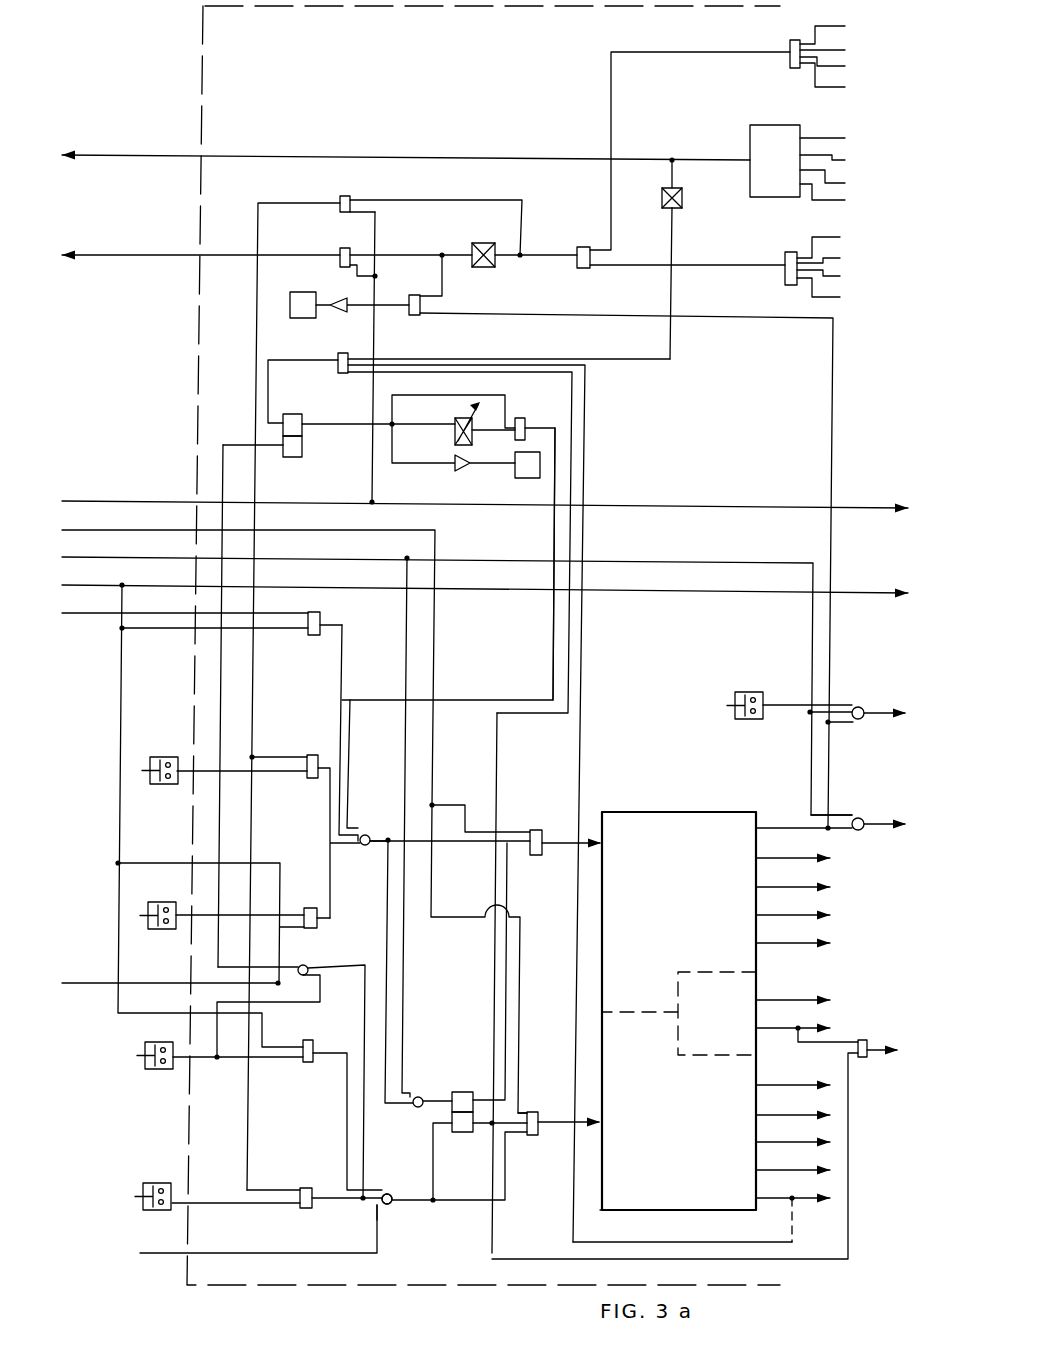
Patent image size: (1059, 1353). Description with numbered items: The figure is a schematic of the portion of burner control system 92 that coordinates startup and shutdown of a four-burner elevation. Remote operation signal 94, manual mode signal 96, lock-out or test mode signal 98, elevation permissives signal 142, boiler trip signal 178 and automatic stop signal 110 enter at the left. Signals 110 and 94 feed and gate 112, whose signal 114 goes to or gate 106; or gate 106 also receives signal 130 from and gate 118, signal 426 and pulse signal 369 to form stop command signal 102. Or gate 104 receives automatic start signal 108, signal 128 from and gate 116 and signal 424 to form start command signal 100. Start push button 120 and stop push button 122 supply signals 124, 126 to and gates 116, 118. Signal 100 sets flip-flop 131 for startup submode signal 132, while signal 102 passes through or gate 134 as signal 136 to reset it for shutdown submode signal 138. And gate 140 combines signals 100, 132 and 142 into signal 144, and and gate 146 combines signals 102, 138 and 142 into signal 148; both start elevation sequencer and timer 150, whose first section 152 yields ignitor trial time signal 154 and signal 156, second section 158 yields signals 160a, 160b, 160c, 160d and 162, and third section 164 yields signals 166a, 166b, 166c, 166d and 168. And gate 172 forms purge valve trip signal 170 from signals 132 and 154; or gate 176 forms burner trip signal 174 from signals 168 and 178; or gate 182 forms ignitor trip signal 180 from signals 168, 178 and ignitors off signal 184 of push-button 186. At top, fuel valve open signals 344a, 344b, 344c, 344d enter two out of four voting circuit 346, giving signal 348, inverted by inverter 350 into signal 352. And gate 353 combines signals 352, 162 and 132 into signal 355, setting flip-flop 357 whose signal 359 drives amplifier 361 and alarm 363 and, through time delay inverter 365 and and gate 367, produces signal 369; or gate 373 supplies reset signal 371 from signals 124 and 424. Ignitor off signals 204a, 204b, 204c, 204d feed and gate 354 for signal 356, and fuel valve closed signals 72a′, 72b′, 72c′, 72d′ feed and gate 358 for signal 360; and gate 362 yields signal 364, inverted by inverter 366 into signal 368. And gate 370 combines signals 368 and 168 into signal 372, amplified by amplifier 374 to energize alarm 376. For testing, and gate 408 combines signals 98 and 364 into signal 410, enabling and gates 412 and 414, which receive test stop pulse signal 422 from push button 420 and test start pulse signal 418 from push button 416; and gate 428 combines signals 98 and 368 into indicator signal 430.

The burner control system 92 is at (221, 51).
The output signal 348 is at (147, 155).
The output signal 430 is at (147, 255).
The signal 410 is at (288, 203).
The and gate 408 is at (348, 197).
The and gate 428 is at (343, 248).
The inverter 366 is at (508, 226).
The output signal 364 is at (551, 255).
The and gate 362 is at (582, 247).
The output signal 356 is at (611, 78).
The and gate 370 is at (424, 272).
The amplifier 374 is at (336, 298).
The alarm or annunciator 376 is at (290, 316).
The output signal 372 is at (395, 306).
The output signal 368 is at (442, 280).
The output signal 168 is at (575, 313).
The and gate 353 is at (340, 360).
The output signal 352 is at (631, 362).
The output signal 355 is at (271, 376).
The output signal 359 is at (304, 428).
The flip-flop 357 is at (296, 455).
The signal 371 is at (222, 443).
The time delay inverter 365 is at (450, 424).
The and gate 367 is at (520, 418).
The amplifier 361 is at (450, 470).
The alarm or annunciator 363 is at (520, 476).
The inverter 350 is at (678, 190).
The two out of four voting circuit 346 is at (744, 134).
The and gate 354 is at (786, 52).
The signal 204a is at (838, 24).
The signal 204b is at (838, 46).
The signal 204c is at (838, 64).
The signal 204d is at (838, 86).
The signal 344a is at (838, 137).
The signal 344b is at (838, 159).
The signal 344c is at (838, 182).
The signal 344d is at (838, 199).
The output signal 360 is at (748, 265).
The and gate 358 is at (783, 280).
The signal 72a′ is at (833, 236).
The signal 72b′ is at (833, 257).
The signal 72c′ is at (833, 275).
The signal 72d′ is at (833, 296).
The lock-out or test mode signal 98 is at (129, 501).
The elevation permissives signal 142 is at (127, 530).
The boiler trip signal 178 is at (127, 557).
The remote operation signal 94 is at (118, 585).
The automatic stop signal 110 is at (120, 613).
The and gate 112 is at (316, 612).
The signal 114 is at (342, 672).
The signal 369 is at (553, 534).
The push button 420 is at (166, 738).
The test stop pulse signal 422 is at (198, 770).
The and gate 412 is at (314, 755).
The signal 426 is at (330, 810).
The stop command signal 102 is at (392, 812).
The or gate 106 is at (362, 846).
The output signal 148 is at (546, 818).
The and gate 146 is at (540, 830).
The output signal 138 is at (494, 1098).
The output signal 136 is at (488, 1098).
The stop push button 122 is at (164, 884).
The signal 126 is at (192, 922).
The and gate 118 is at (320, 888).
The signal 130 is at (325, 918).
The or gate 373 is at (302, 965).
The manual mode signal 96 is at (104, 983).
The start push button 120 is at (152, 1042).
The signal 124 is at (197, 1060).
The and gate 116 is at (310, 1040).
The signal 128 is at (344, 1132).
The or gate 134 is at (418, 1108).
The flip-flop 131 is at (440, 1114).
The output signal 132 is at (482, 1126).
The output signal 144 is at (566, 1094).
The and gate 140 is at (528, 1136).
The push button 416 is at (158, 1183).
The test start pulse signal 418 is at (206, 1203).
The and gate 414 is at (308, 1188).
The signal 424 is at (360, 1206).
The start command signal 100 is at (397, 1203).
The or gate 104 is at (385, 1214).
The automatic start signal 108 is at (286, 1253).
The elevation sequencer and timer 150 is at (694, 800).
The third section 164 is at (650, 824).
The second section 158 is at (672, 1198).
The first section 152 is at (743, 990).
The output signal 166a is at (820, 943).
The output signal 166b is at (820, 915).
The output signal 166c is at (820, 887).
The output signal 166d is at (820, 858).
The output signal 156 is at (816, 998).
The ignitor trial time signal 154 is at (766, 1014).
The output signal 160a is at (820, 1083).
The output signal 160b is at (820, 1113).
The output signal 160c is at (820, 1140).
The output signal 160d is at (820, 1168).
The output signal 162 is at (808, 1196).
The and gate 172 is at (849, 1034).
The purge valve trip signal 170 is at (884, 1054).
The or gate 176 is at (874, 794).
The burner trip signal 174 is at (884, 828).
The or gate 182 is at (876, 682).
The ignitor trip signal 180 is at (878, 742).
The push-button 186 is at (742, 694).
The ignitors off signal 184 is at (792, 705).